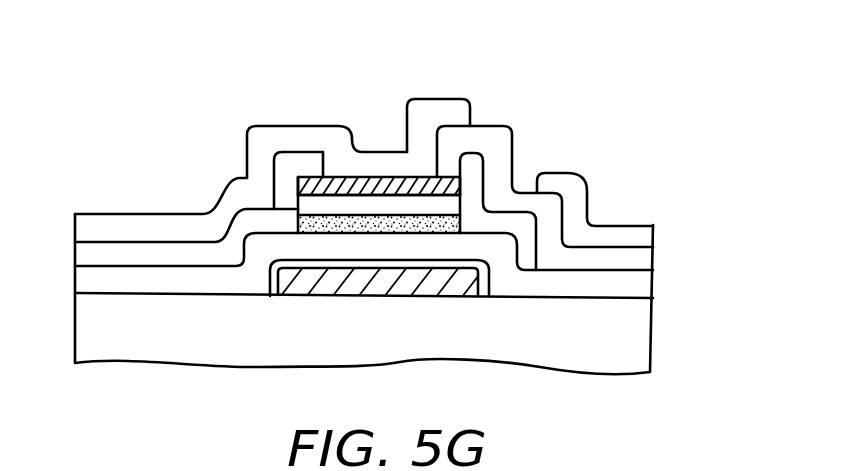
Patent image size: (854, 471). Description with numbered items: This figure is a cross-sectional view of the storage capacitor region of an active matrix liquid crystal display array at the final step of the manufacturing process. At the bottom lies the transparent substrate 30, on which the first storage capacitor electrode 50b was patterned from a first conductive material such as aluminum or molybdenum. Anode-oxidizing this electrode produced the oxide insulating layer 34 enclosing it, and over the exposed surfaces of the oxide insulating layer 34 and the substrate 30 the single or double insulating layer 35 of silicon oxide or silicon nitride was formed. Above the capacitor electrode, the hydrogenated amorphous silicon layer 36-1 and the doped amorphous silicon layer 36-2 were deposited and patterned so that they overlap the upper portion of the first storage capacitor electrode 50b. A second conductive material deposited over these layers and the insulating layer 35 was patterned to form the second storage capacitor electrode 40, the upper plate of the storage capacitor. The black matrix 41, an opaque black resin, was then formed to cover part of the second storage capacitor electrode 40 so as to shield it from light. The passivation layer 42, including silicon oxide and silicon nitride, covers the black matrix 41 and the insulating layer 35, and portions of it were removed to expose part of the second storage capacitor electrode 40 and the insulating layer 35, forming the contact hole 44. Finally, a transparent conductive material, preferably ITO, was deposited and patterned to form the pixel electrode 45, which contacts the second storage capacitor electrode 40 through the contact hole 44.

The transparent substrate 30 is at (597, 340).
The oxide insulating layer 34 is at (268, 268).
The insulating layer 35 is at (637, 286).
The hydrogenated amorphous silicon layer 36-1 is at (423, 223).
The doped amorphous silicon layer 36-2 is at (298, 202).
The second storage capacitor electrode 40 is at (358, 176).
The black matrix 41 is at (498, 225).
The passivation layer 42 is at (288, 160).
The contact hole 44 is at (382, 130).
The pixel electrode 45 is at (167, 227).
The first storage capacitor electrode 50b is at (400, 290).